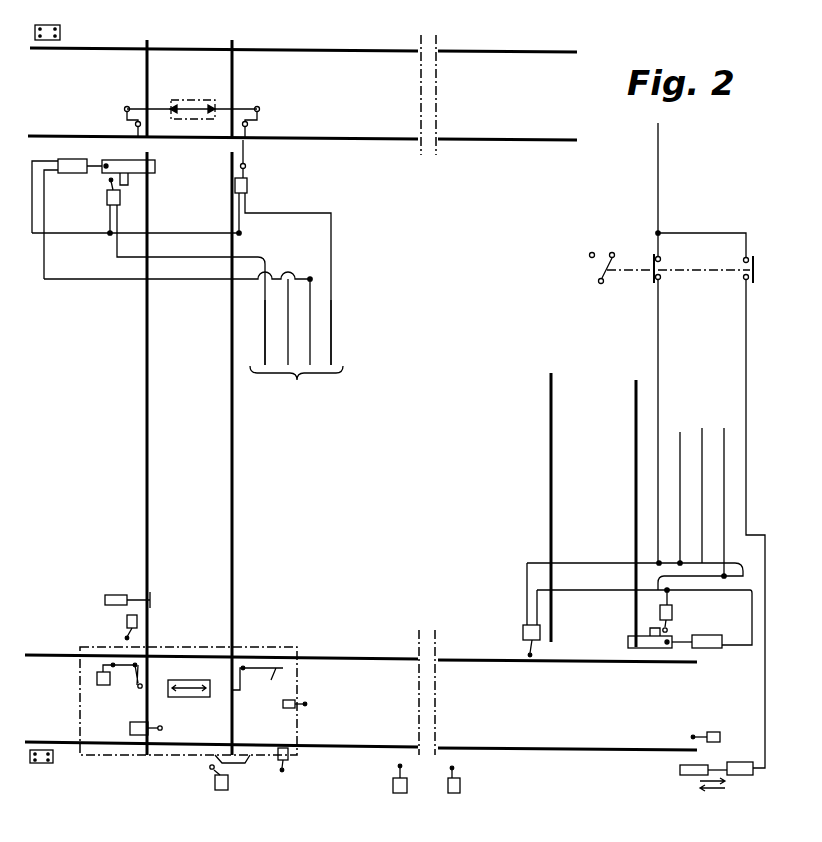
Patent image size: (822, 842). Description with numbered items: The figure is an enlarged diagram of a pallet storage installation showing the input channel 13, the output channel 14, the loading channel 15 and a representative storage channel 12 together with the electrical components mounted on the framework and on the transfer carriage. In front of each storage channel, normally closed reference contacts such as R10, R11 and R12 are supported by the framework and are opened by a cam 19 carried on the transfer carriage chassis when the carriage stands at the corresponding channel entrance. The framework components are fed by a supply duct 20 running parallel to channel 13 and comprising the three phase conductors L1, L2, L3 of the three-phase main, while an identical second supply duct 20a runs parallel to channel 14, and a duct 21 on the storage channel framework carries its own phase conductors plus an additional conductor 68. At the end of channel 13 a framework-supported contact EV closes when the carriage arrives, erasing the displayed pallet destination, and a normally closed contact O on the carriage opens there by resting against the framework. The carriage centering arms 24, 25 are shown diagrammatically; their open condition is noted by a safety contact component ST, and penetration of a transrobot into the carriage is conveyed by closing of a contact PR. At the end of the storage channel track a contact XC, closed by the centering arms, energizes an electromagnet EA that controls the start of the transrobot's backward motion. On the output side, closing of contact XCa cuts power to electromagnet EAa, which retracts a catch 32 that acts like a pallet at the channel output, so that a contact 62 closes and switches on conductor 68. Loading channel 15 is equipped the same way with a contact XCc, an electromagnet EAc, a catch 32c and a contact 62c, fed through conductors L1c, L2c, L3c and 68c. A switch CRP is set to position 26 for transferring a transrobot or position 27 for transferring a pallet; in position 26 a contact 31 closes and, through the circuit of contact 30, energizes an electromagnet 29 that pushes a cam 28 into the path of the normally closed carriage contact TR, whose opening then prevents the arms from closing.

The storage channel 12 is at (222, 540).
The input channel 13 is at (355, 683).
The output channel 14 is at (375, 126).
The loading channel 15 is at (575, 463).
The cam 19 is at (240, 764).
The supply duct 20 is at (53, 756).
The second supply duct 20a is at (60, 32).
The duct 21 is at (296, 390).
The centering arm 24 is at (127, 689).
The centering arm 25 is at (257, 689).
The switch position 26 is at (589, 255).
The switch position 27 is at (616, 256).
The cam 28 is at (681, 770).
The electromagnet 29 is at (742, 761).
The switch 30 is at (662, 280).
The contact 31 is at (742, 275).
The catch 32 is at (140, 178).
The catch 32c is at (660, 650).
The contact 62 is at (120, 195).
The contact 62c is at (675, 617).
The additional conductor 68 is at (262, 301).
The additional conductor 68c is at (724, 428).
The phase conductor L1 is at (314, 302).
The phase conductor L2 is at (334, 265).
The phase conductor L3 is at (292, 301).
The phase conductor L1c is at (680, 432).
The phase conductor L2c is at (659, 432).
The phase conductor L3c is at (702, 428).
The electromagnet EA is at (118, 589).
The electromagnet EAa is at (67, 219).
The electromagnet EAc is at (705, 650).
The contact XC is at (127, 622).
The contact XCa is at (247, 185).
The contact XCc is at (522, 630).
The safety contact component ST is at (103, 685).
The contact PR is at (130, 728).
The contact O is at (303, 706).
The contact TR is at (295, 764).
The reference contact R10 is at (460, 785).
The reference contact R11 is at (393, 782).
The reference contact R12 is at (215, 780).
The switch CRP is at (606, 252).
The contact EV is at (712, 731).